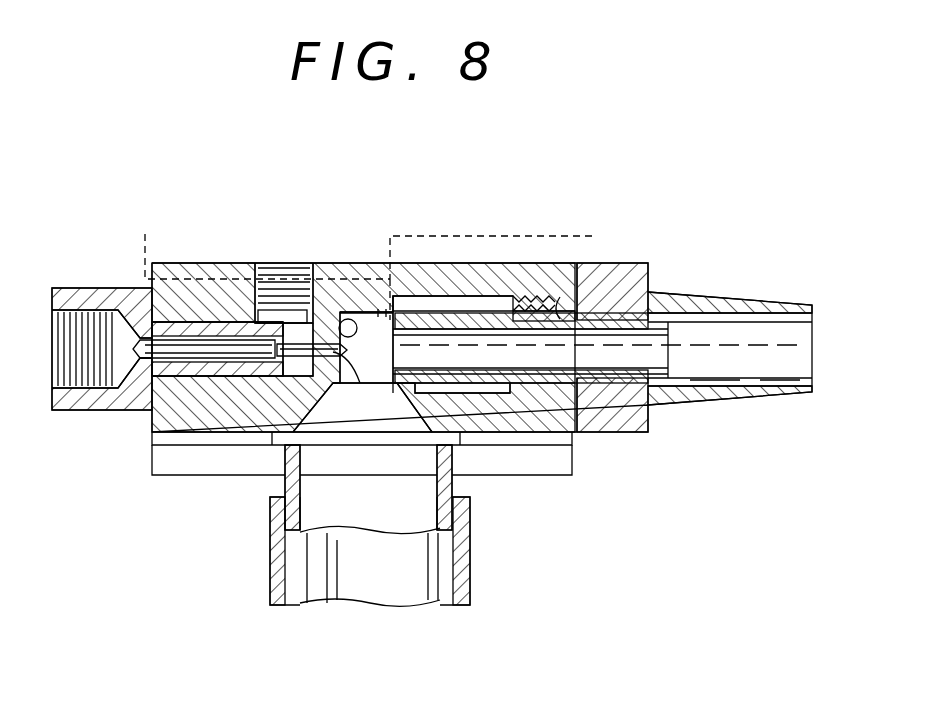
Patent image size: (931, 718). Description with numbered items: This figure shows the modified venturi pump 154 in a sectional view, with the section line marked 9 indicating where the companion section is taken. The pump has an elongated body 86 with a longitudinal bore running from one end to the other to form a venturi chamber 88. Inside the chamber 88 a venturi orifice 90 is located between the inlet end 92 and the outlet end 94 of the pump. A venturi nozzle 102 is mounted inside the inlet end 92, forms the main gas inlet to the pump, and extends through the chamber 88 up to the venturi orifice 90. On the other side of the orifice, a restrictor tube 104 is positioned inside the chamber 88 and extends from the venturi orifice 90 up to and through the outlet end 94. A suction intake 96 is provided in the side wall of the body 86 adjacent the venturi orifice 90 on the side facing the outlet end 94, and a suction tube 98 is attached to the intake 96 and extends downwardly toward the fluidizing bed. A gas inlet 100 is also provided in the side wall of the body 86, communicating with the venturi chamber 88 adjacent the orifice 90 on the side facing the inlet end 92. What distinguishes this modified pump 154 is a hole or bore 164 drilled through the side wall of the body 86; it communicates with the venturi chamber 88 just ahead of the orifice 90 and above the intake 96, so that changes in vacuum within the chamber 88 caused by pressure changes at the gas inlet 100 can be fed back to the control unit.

The section line 9- 9 is at (170, 232).
The elongated body 86 is at (190, 283).
The venturi chamber 88 is at (378, 330).
The venturi orifice 90 is at (362, 407).
The inlet end 92 is at (155, 283).
The outlet end 94 is at (574, 474).
The suction intake 96 is at (325, 425).
The suction tube 98 is at (470, 552).
The gas inlet 100 is at (285, 277).
The venturi nozzle 102 is at (173, 317).
The restrictor tube 104 is at (472, 313).
The modified venturi pump 154 is at (670, 266).
The hole or bore 164 is at (343, 320).